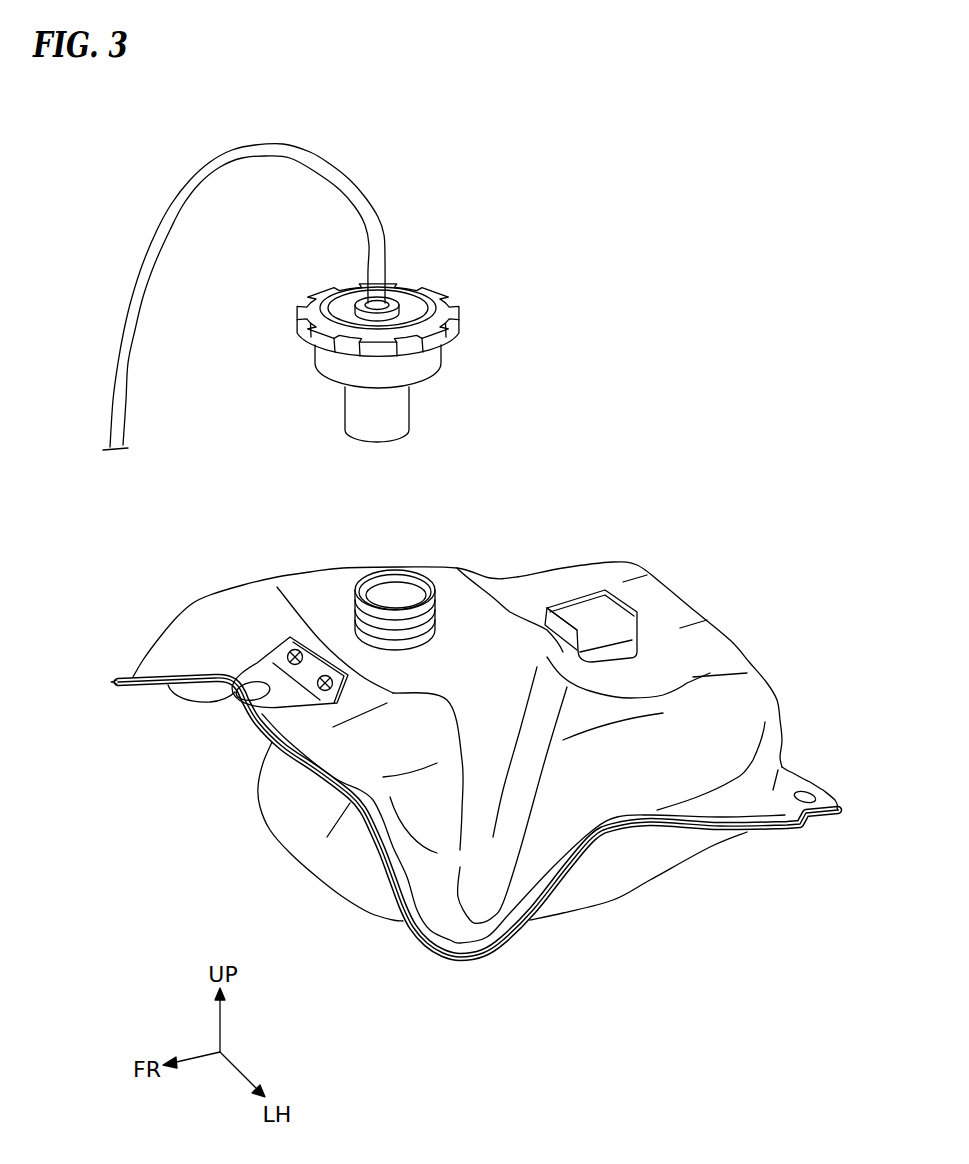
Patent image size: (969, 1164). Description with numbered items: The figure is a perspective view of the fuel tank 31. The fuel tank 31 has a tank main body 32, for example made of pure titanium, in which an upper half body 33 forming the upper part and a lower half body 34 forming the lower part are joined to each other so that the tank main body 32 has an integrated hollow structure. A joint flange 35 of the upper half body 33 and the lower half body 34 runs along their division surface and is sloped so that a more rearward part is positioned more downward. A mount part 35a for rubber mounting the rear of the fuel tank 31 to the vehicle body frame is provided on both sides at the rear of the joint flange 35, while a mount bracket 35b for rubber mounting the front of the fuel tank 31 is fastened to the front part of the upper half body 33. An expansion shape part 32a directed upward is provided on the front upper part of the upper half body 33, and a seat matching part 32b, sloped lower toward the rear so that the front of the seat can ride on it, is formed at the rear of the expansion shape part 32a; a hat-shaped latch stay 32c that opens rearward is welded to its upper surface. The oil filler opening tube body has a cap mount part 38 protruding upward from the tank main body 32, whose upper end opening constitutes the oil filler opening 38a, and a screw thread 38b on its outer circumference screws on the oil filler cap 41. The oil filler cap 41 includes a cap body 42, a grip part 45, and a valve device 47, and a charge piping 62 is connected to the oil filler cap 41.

The fuel tank 31 is at (490, 704).
The tank main body 32 is at (490, 746).
The expansion shape part 32a is at (297, 587).
The seat matching part 32b is at (503, 603).
The latch stay 32c is at (593, 603).
The upper half body 33 is at (486, 723).
The lower half body 34 is at (655, 870).
The joint flange 35 is at (490, 765).
The mount part 35a is at (802, 785).
The mount bracket 35b is at (243, 677).
The cap mount part 38 is at (403, 556).
The oil filler opening 38a is at (383, 582).
The screw thread 38b is at (350, 600).
The oil filler cap 41 is at (392, 318).
The cap body 42 is at (423, 374).
The grip part 45 is at (455, 318).
The valve device 47 is at (351, 409).
The charge piping 62 is at (345, 182).